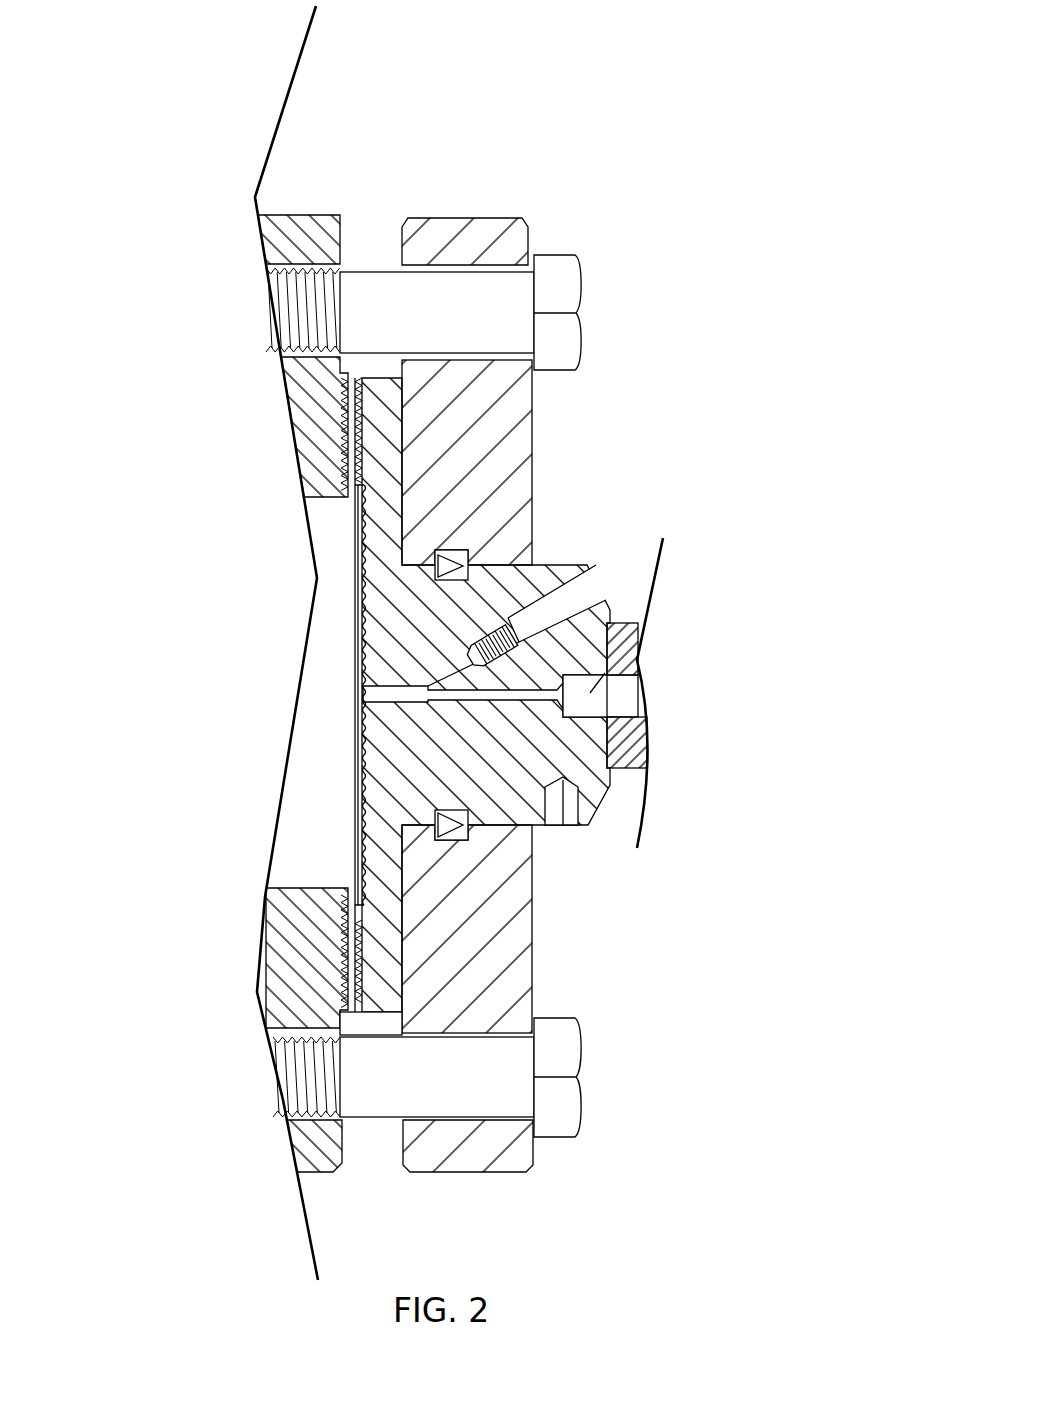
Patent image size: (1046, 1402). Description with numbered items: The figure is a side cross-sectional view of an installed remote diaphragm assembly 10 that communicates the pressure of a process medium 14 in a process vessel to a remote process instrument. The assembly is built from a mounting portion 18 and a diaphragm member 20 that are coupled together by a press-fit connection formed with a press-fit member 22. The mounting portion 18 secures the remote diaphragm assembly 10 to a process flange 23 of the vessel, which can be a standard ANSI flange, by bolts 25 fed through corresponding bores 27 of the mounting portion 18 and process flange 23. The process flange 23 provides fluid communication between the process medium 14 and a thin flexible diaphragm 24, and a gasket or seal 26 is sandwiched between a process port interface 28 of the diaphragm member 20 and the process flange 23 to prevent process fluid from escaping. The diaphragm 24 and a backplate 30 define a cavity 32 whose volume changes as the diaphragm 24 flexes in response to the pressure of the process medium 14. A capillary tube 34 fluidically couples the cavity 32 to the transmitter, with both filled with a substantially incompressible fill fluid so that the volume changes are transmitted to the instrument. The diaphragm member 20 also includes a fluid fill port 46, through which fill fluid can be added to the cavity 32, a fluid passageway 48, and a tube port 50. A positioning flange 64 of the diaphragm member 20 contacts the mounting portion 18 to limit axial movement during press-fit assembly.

The remote diaphragm assembly 10 is at (489, 643).
The process medium 14 is at (342, 879).
The mounting portion 18 is at (528, 975).
The diaphragm member 20 is at (577, 568).
The press-fit member 22 is at (467, 830).
The process flange 23 is at (290, 220).
The diaphragm 24 is at (362, 790).
The bolts 25 is at (572, 273).
The gasket or seal 26 is at (346, 395).
The bores 27 is at (320, 268).
The process port interface 28 is at (358, 402).
The backplate 30 is at (364, 748).
The cavity 32 is at (364, 643).
The capillary tube 34 is at (620, 702).
The fluid fill port 46 is at (587, 597).
The fluid passageway 48 is at (563, 713).
The tube port 50 is at (640, 633).
The positioning flange 64 is at (392, 1002).